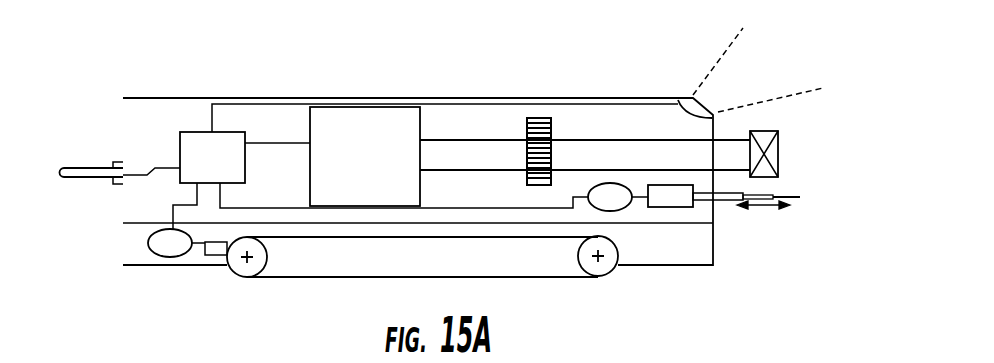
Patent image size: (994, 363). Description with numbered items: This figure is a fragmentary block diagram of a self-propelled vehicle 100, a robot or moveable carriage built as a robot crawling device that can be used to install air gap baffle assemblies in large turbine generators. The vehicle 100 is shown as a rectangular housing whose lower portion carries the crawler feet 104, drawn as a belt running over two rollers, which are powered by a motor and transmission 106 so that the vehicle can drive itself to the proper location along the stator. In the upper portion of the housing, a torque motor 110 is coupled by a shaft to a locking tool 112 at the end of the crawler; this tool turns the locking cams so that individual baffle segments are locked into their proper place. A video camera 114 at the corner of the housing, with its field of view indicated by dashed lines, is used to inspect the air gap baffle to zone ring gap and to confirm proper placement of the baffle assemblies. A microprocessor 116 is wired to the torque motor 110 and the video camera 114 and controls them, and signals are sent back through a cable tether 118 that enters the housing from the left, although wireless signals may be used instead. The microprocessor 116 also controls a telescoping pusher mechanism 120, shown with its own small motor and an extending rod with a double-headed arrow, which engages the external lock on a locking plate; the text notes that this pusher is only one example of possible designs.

The self-propelled vehicle 100 is at (418, 67).
The crawler feet 104 is at (592, 275).
The motor and transmission 106 is at (174, 258).
The torque motor 110 is at (326, 107).
The locking tool 112 is at (778, 146).
The video camera 114 is at (685, 96).
The microprocessor 116 is at (197, 132).
The cable tether 118 is at (88, 165).
The telescoping pusher mechanism 120 is at (685, 199).